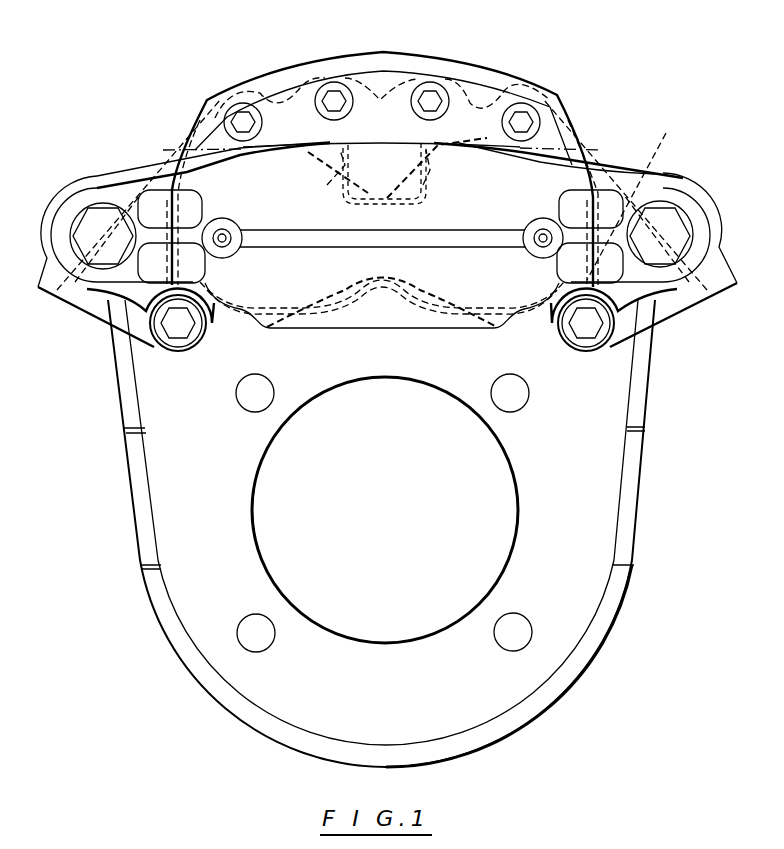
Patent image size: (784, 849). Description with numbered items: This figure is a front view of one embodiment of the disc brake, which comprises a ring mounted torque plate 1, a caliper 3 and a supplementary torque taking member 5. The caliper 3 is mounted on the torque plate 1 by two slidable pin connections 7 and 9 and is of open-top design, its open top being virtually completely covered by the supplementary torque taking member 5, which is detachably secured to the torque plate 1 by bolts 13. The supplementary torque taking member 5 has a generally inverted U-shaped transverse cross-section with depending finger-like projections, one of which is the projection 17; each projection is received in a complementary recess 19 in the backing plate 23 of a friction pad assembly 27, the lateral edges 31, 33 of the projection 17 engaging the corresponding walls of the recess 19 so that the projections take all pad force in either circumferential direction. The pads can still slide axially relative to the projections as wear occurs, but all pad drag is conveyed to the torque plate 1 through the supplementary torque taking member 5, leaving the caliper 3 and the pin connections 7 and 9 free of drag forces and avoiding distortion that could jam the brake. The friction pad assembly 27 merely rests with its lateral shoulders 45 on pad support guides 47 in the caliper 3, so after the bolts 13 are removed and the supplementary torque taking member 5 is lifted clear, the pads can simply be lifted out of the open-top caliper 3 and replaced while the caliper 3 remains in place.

The torque plate 1 is at (182, 602).
The caliper 3 is at (102, 176).
The supplementary torque taking member 5 is at (353, 70).
The slidable pin connection 7 is at (170, 323).
The slidable pin connection 9 is at (594, 323).
The bolts 13 is at (232, 118).
The finger-like projection 17 is at (333, 158).
The recess 19 is at (357, 198).
The backing plate 23 is at (447, 153).
The friction pad assembly 27 is at (490, 292).
The lateral edge 31 is at (325, 180).
The lateral edge 33 is at (423, 185).
The lateral shoulders 45 is at (160, 160).
The pad support guides 47 is at (177, 280).